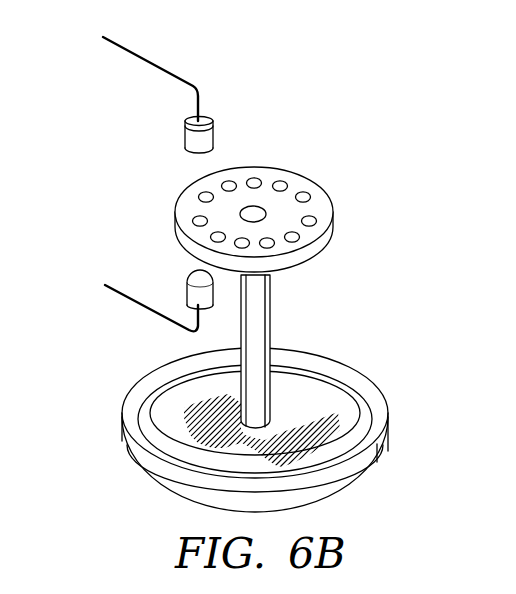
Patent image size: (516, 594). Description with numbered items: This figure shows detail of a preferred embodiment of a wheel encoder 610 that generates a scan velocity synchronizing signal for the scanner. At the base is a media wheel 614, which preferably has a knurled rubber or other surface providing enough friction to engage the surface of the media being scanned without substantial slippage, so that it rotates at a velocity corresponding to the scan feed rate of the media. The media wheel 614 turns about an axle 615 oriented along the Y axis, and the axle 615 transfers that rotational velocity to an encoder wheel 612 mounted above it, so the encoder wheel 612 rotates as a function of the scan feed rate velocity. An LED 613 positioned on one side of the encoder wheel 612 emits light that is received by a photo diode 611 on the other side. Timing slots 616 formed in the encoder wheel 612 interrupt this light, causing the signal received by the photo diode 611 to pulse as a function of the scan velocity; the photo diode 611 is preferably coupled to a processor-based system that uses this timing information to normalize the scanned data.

The wheel encoder 610 is at (364, 74).
The photo diode 611 is at (213, 132).
The encoder wheel 612 is at (288, 209).
The LED 613 is at (185, 289).
The media wheel 614 is at (122, 430).
The axle 615 is at (271, 318).
The timing slots 616 is at (309, 193).